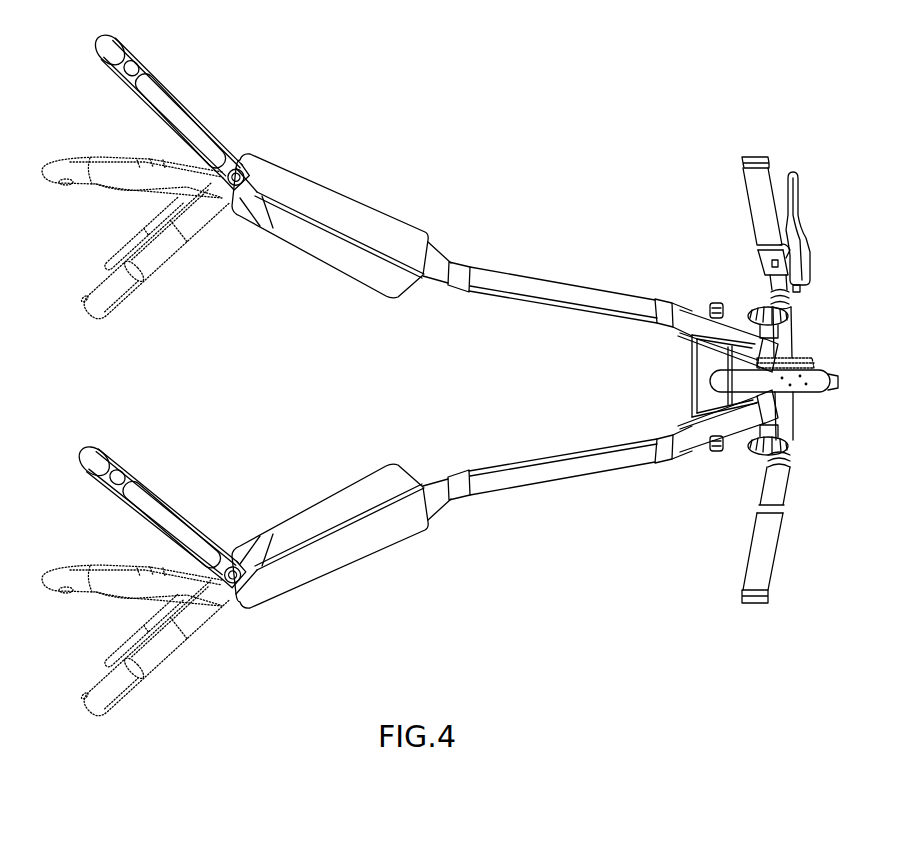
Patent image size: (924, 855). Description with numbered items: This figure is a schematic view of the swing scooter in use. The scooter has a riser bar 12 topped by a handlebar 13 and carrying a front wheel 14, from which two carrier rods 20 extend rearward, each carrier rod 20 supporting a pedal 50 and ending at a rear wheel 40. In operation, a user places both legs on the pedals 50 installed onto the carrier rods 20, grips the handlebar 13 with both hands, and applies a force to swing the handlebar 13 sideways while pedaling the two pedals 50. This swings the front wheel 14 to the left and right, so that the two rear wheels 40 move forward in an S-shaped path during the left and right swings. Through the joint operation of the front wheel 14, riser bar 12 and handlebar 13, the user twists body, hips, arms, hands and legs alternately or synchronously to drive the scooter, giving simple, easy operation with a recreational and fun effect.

The riser bar 12 is at (818, 362).
The handlebar 13 is at (790, 338).
The front wheel 14 is at (803, 385).
The carrier rod 20 is at (548, 290).
The rear wheel 40 is at (190, 128).
The pedal 50 is at (377, 212).